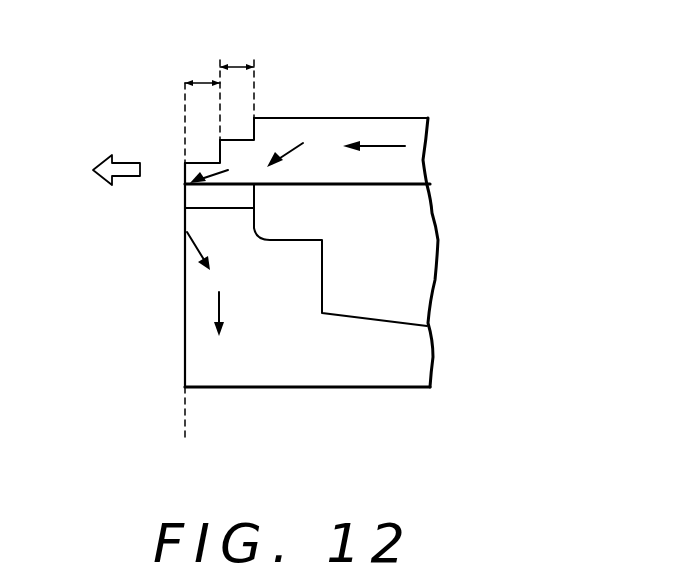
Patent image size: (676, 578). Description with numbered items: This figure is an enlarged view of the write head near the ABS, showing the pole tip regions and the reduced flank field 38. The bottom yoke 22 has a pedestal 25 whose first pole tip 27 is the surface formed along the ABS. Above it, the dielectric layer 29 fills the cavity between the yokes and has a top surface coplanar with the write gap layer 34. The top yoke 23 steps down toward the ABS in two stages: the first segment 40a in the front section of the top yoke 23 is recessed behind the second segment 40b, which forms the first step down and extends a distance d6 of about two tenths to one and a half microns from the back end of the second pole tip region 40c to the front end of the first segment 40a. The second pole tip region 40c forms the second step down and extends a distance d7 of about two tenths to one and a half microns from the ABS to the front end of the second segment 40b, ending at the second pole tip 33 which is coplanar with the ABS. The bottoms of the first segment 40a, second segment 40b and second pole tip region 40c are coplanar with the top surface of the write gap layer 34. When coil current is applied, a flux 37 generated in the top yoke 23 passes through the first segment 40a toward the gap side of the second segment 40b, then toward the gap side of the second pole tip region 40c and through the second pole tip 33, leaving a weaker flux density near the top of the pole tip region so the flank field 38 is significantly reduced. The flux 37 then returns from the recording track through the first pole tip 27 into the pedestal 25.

The bottom yoke 22 is at (405, 355).
The top yoke 23 is at (412, 157).
The pedestal 25 is at (282, 298).
The first pole tip 27 is at (183, 273).
The dielectric layer 29 is at (407, 212).
The second pole tip 33 is at (186, 179).
The write gap layer 34 is at (193, 195).
The flux 37 is at (383, 143).
The flank field 38 is at (97, 170).
The first segment 40a is at (303, 130).
The second segment 40b is at (230, 150).
The second pole tip region 40c is at (190, 166).
The distance d6 is at (237, 73).
The distance d7 is at (203, 80).
The air bearing surface ABS is at (185, 433).